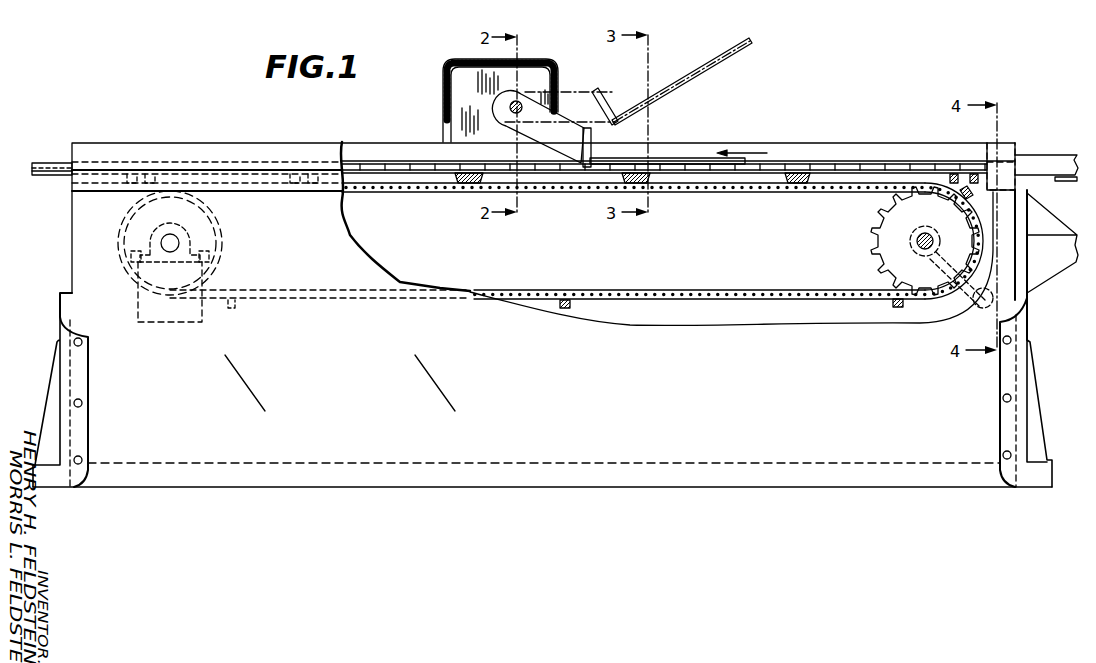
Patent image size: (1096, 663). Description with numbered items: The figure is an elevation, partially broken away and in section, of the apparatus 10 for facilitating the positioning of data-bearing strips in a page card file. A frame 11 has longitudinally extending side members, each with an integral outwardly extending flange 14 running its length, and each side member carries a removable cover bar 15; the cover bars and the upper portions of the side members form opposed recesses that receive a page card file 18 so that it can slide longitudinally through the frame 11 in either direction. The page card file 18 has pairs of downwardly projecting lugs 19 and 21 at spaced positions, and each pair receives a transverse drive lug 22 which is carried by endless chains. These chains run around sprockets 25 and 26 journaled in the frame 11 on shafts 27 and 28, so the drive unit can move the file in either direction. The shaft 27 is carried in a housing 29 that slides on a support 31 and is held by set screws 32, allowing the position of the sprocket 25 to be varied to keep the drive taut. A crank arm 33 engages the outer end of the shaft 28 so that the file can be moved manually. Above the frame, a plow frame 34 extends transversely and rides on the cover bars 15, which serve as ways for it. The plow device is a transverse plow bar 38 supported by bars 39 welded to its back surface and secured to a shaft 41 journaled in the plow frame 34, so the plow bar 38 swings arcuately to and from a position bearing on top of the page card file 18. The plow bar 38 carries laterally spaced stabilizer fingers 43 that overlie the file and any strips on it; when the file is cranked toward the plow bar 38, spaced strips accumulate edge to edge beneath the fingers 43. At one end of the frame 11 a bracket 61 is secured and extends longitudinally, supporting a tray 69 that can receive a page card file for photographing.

The apparatus 10 is at (322, 140).
The frame 11 is at (177, 483).
The flange 14 is at (78, 196).
The cover bar 15 is at (72, 148).
The page card file 18 is at (42, 173).
The lug 19 is at (462, 185).
The lug 21 is at (480, 184).
The lug 22 is at (470, 190).
The sprocket 25 is at (592, 193).
The sprocket 26 is at (876, 212).
The shaft 27 is at (179, 242).
The shaft 28 is at (917, 241).
The housing 29 is at (170, 226).
The support 31 is at (205, 268).
The set screw 32 is at (140, 243).
The crank arm 33 is at (978, 306).
The plow frame 34 is at (443, 65).
The plow bar 38 is at (603, 95).
The bar 39 is at (548, 118).
The shaft 41 is at (510, 104).
The stabilizer finger 43 is at (700, 74).
The bracket 61 is at (1053, 266).
The tray 69 is at (1040, 157).